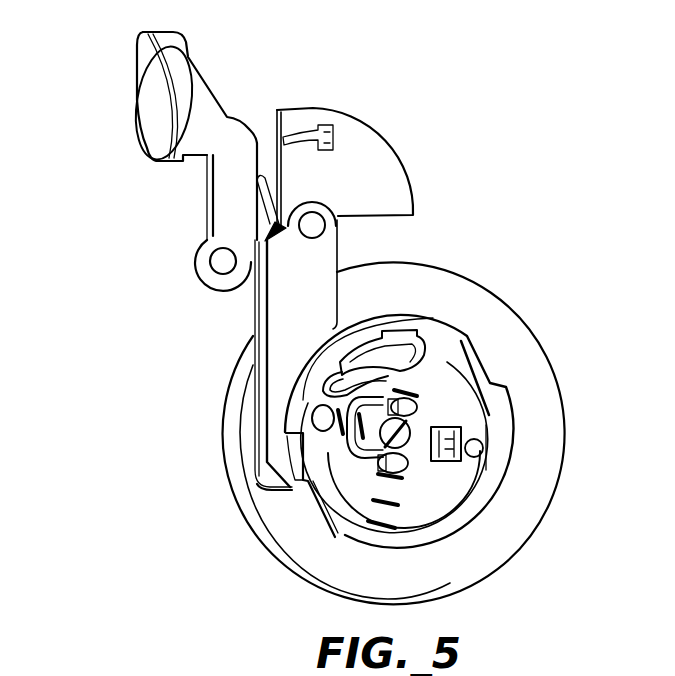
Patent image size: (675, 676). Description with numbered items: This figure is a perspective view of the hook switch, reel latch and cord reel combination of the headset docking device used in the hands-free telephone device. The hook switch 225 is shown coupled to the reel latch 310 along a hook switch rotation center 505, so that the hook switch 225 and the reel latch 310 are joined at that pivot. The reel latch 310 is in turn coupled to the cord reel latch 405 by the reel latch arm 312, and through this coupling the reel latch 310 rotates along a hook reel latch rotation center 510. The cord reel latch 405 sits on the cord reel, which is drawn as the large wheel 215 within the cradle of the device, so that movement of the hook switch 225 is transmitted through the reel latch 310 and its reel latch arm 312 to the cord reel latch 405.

The hook switch 225 is at (150, 137).
The hook switch rotation center 505 is at (223, 261).
The hook reel latch rotation center 510 is at (322, 215).
The reel latch 310 is at (333, 264).
The reel latch arm 312 is at (273, 301).
The wheel 215 is at (307, 562).
The cord reel latch 405 is at (300, 457).